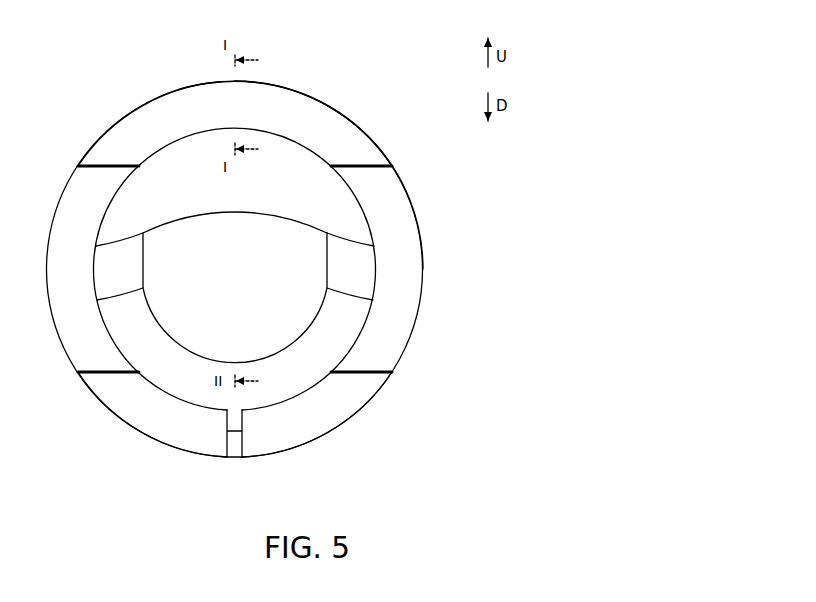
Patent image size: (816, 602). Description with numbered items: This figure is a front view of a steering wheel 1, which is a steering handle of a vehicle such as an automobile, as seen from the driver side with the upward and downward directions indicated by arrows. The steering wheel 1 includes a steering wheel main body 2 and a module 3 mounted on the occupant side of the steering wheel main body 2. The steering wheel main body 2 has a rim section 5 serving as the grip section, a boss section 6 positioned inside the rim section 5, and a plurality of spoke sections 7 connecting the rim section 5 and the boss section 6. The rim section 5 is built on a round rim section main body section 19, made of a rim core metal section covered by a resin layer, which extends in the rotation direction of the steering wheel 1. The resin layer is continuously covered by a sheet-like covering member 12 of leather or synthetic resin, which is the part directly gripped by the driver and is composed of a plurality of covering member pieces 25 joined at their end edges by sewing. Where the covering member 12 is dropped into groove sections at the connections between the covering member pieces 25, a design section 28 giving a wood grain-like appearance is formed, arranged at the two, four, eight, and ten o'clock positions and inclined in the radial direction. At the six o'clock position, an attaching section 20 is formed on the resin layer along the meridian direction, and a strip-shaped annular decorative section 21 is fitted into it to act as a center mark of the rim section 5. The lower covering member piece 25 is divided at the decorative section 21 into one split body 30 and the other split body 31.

The steering wheel 1 is at (287, 50).
The steering wheel main body 2 is at (369, 121).
The module 3 is at (246, 221).
The rim section 5 is at (418, 277).
The boss section 6 is at (200, 213).
The spoke sections 7 is at (122, 238).
The covering member 12 is at (412, 228).
The rim section main body section 19 is at (199, 84).
The attaching section 20 is at (241, 413).
The decorative section 21 is at (235, 458).
The covering member pieces 25 is at (147, 103).
The design section 28 is at (88, 166).
The one split body 30 is at (158, 428).
The other split body 31 is at (300, 448).